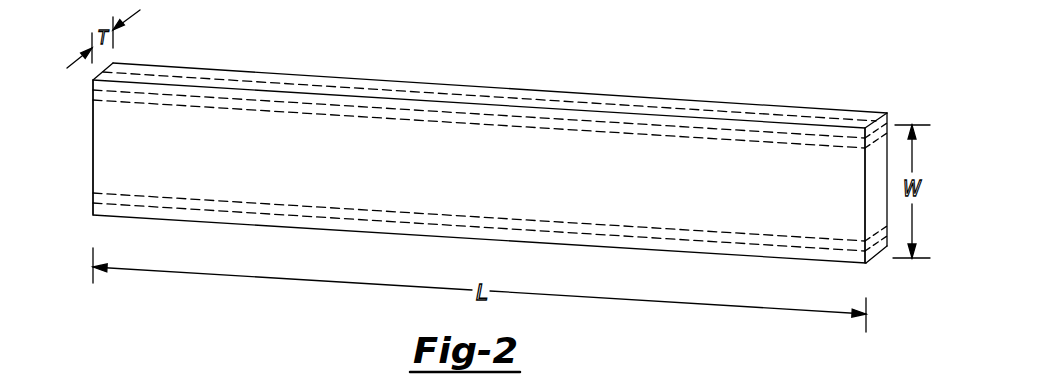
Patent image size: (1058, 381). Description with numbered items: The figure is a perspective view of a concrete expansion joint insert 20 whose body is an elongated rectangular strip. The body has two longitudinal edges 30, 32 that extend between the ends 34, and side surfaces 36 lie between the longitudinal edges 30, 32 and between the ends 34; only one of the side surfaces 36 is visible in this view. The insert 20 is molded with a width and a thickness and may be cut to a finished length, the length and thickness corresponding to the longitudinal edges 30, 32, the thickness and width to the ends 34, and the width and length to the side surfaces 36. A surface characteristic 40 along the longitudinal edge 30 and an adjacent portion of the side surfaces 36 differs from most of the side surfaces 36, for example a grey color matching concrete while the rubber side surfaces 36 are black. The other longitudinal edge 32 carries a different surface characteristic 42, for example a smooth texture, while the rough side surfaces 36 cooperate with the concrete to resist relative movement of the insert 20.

The concrete expansion joint insert 20 is at (828, 108).
The longitudinal edge 30 is at (438, 92).
The longitudinal edge 32 is at (688, 253).
The ends 34 is at (93, 153).
The side surfaces 36 is at (492, 178).
The surface characteristic 40 is at (172, 105).
The surface characteristic 42 is at (202, 210).